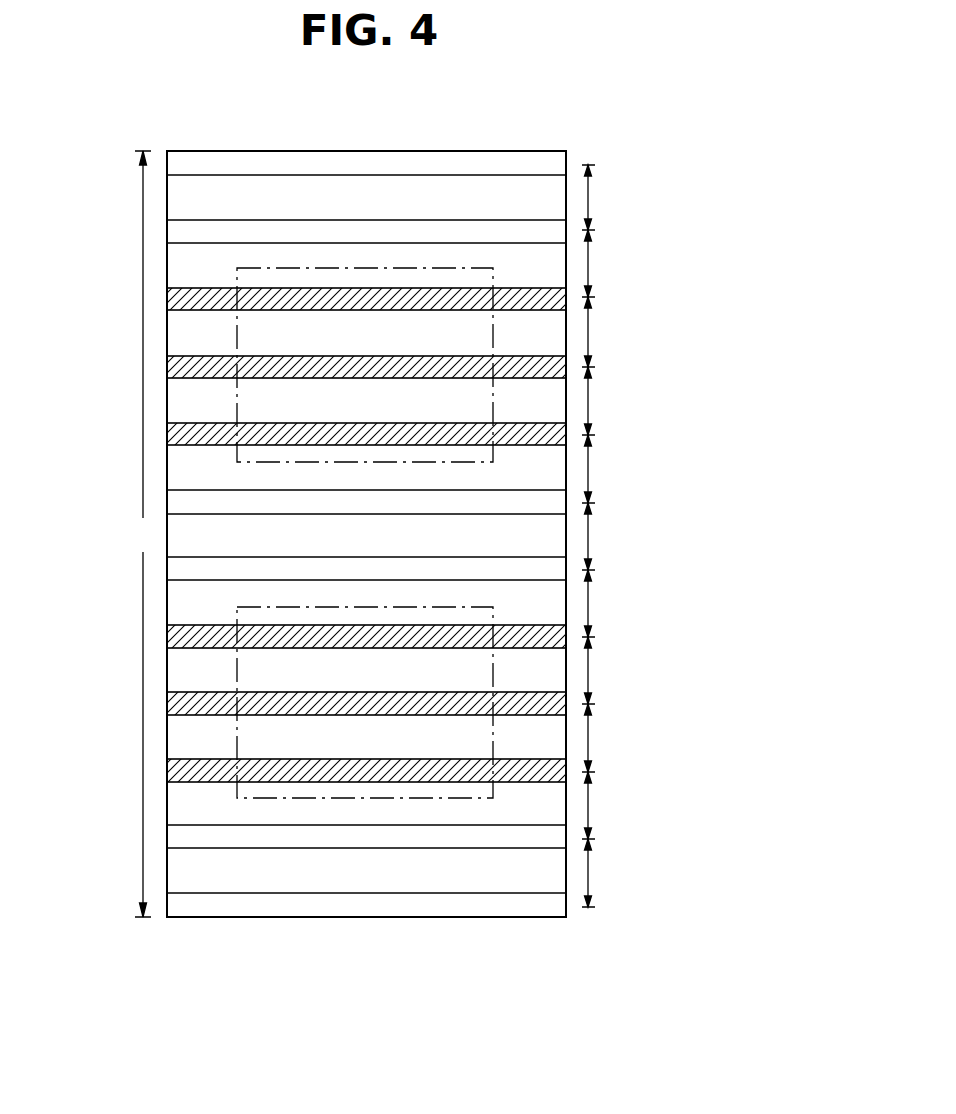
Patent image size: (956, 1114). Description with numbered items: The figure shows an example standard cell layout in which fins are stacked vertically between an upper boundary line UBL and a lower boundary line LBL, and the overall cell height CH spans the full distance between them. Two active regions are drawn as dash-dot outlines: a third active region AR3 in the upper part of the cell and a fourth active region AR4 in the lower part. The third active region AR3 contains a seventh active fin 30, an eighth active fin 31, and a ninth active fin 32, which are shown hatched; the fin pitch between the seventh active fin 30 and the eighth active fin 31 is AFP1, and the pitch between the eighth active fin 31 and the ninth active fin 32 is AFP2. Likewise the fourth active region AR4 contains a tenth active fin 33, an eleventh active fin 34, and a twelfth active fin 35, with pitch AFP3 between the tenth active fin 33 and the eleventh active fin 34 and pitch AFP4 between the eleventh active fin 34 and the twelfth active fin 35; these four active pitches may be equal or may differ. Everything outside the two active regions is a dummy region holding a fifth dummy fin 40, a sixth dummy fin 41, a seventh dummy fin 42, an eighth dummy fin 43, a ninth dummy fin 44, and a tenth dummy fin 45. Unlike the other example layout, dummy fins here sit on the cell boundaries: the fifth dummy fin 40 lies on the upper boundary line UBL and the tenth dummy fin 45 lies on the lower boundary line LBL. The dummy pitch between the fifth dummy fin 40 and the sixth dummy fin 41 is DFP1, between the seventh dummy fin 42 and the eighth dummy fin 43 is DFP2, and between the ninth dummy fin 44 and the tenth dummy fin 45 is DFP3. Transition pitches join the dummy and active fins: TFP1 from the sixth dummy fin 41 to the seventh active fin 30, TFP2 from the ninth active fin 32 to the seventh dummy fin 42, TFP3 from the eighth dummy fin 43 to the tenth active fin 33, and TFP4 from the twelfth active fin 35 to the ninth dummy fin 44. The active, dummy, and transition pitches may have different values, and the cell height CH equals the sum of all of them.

The fifth dummy fin 40 is at (201, 158).
The sixth dummy fin 41 is at (176, 231).
The seventh dummy fin 42 is at (176, 492).
The eighth dummy fin 43 is at (176, 572).
The ninth dummy fin 44 is at (176, 837).
The tenth dummy fin 45 is at (196, 912).
The seventh active fin 30 is at (172, 298).
The eighth active fin 31 is at (172, 367).
The ninth active fin 32 is at (172, 432).
The tenth active fin 33 is at (172, 638).
The eleventh active fin 34 is at (172, 705).
The twelfth active fin 35 is at (172, 770).
The upper boundary line UBL is at (273, 172).
The lower boundary line LBL is at (523, 895).
The third active region AR3 is at (388, 268).
The fourth active region AR4 is at (385, 800).
The cell height CH is at (136, 534).
The fin pitch between fifth dummy fin and sixth dummy fin DFP1 is at (615, 197).
The fin pitch between seventh dummy fin and eighth dummy fin DFP2 is at (615, 536).
The fin pitch between ninth dummy fin and tenth dummy fin DFP3 is at (615, 873).
The fin pitch between sixth dummy fin and seventh active fin TFP1 is at (614, 263).
The fin pitch between ninth active fin and seventh dummy fin TFP2 is at (614, 469).
The fin pitch between eighth dummy fin and tenth active fin TFP3 is at (614, 603).
The fin pitch between twelfth active fin and ninth dummy fin TFP4 is at (614, 805).
The fin pitch between seventh active fin and eighth active fin AFP1 is at (614, 332).
The fin pitch between eighth active fin and ninth active fin AFP2 is at (614, 401).
The fin pitch between tenth active fin and eleventh active fin AFP3 is at (614, 670).
The fin pitch between eleventh active fin and twelfth active fin AFP4 is at (614, 738).